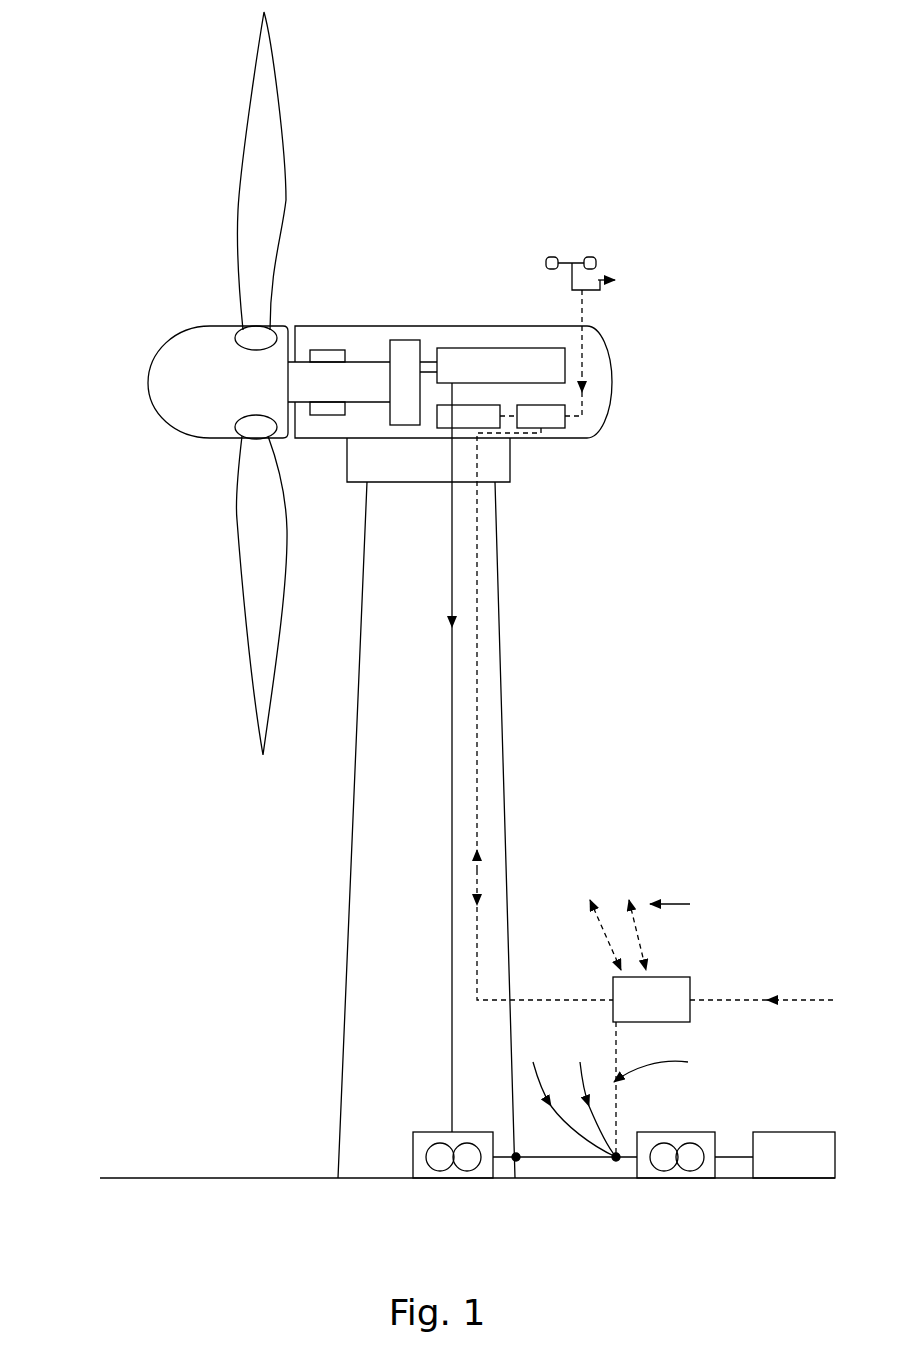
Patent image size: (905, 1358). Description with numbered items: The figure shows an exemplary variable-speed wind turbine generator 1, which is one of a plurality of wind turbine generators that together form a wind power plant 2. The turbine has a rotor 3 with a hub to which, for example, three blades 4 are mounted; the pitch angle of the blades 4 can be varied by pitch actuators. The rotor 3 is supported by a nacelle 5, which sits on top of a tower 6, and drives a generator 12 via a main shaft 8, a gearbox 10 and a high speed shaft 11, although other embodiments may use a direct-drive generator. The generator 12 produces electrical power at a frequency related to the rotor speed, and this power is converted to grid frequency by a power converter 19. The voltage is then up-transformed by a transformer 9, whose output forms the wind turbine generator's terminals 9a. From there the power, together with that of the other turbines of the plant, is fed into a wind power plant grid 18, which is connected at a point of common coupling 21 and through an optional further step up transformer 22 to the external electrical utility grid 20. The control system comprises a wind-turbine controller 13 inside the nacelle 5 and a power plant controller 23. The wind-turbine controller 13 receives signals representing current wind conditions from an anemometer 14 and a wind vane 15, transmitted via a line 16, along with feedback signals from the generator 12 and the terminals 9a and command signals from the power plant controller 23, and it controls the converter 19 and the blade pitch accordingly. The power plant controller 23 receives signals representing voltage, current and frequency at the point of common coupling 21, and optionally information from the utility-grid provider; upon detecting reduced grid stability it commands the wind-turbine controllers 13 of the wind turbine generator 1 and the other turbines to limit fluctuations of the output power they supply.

The wind turbine generator 1 is at (444, 158).
The wind power plant 2 is at (146, 206).
The rotor 3 is at (148, 392).
The blades 4 is at (279, 128).
The nacelle 5 is at (330, 326).
The tower 6 is at (350, 918).
The main shaft 8 is at (367, 350).
The transformer 9 is at (425, 1136).
The terminals 9a is at (516, 1162).
The gearbox 10 is at (402, 340).
The high speed shaft 11 is at (433, 360).
The generator 12 is at (498, 348).
The wind-turbine controller 13 is at (566, 430).
The anemometer 14 is at (590, 256).
The wind vane 15 is at (616, 267).
The line 16 is at (588, 352).
The wind power plant grid 18 is at (572, 1158).
The power converter 19 is at (437, 430).
The utility grid 20 is at (805, 1178).
The point of common coupling 21 is at (617, 1162).
The step up transformer 22 is at (704, 1178).
The power plant controller 23 is at (675, 977).